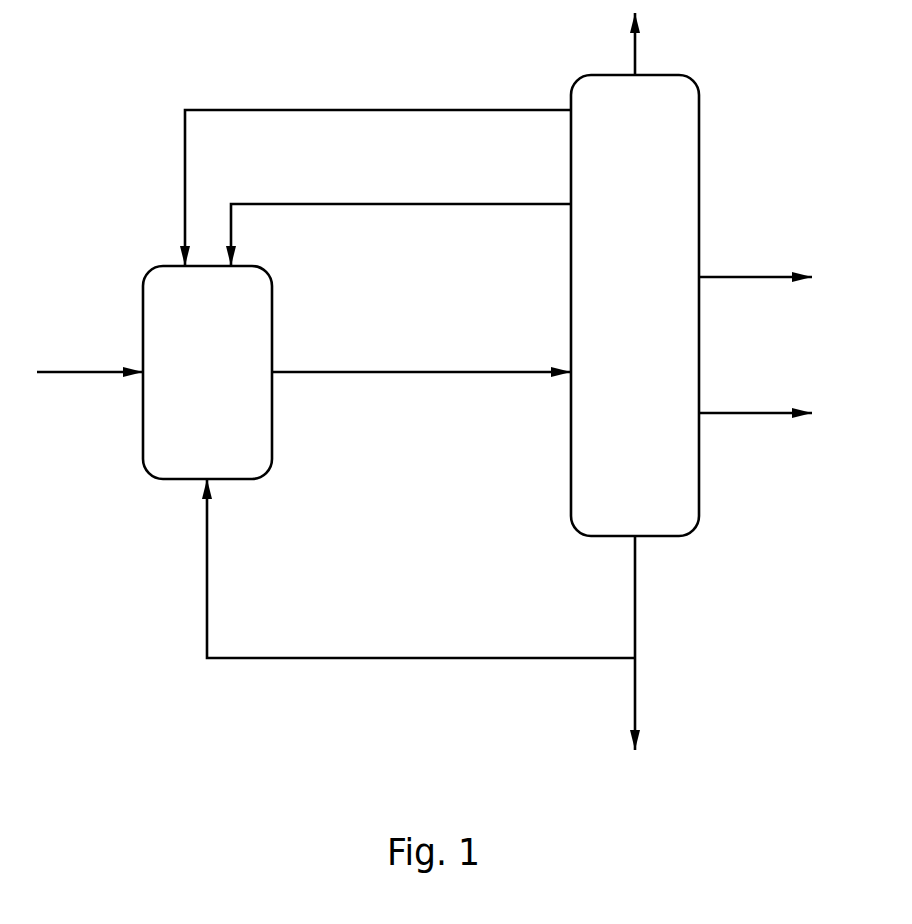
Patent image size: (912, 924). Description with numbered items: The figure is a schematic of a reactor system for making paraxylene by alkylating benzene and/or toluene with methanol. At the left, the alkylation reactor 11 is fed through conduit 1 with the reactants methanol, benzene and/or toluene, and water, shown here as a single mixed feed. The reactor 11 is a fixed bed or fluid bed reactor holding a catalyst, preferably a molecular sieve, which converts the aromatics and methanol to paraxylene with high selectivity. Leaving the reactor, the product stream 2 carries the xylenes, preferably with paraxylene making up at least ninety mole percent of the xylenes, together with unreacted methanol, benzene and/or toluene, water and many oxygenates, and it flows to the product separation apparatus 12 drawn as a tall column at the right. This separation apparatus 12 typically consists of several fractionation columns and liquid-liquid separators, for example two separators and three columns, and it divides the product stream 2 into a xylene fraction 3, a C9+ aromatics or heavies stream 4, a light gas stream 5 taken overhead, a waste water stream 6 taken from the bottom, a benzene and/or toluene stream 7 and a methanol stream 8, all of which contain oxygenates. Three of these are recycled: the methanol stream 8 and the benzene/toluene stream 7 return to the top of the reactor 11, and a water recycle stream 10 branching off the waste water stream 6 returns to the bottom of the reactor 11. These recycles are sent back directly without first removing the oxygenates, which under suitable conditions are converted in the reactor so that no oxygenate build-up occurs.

The conduit 1 is at (68, 372).
The product stream 2 is at (468, 372).
The xylene fraction 3 is at (750, 277).
The C9+ aromatics stream 4 is at (745, 413).
The light gas stream 5 is at (635, 52).
The waste water stream 6 is at (635, 693).
The benzene and/or toluene stream 7 is at (463, 204).
The methanol stream 8 is at (302, 110).
The recycle stream 10 is at (207, 587).
The alkylation reactor 11 is at (122, 508).
The product separation apparatus 12 is at (740, 97).